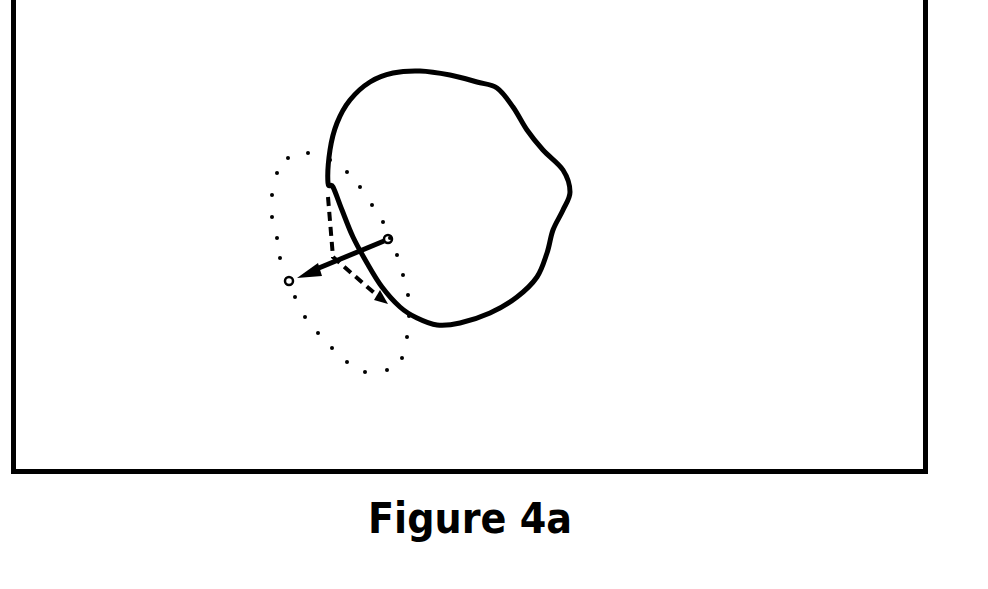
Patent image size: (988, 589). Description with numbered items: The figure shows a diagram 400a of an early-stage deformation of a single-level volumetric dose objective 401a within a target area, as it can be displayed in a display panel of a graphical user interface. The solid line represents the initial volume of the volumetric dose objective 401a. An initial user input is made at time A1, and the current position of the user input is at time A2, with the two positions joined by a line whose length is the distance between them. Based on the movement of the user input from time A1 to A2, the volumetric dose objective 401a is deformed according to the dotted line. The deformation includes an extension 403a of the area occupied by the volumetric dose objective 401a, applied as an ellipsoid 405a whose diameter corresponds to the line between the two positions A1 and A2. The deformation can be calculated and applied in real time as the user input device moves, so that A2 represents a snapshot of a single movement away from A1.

The diagram 400a is at (506, 421).
The volumetric dose objective 401a is at (346, 105).
The extension 403a is at (384, 302).
The ellipsoid 405a is at (267, 218).
The time of initial user input A1 is at (357, 250).
The time of current position of user input A2 is at (274, 286).